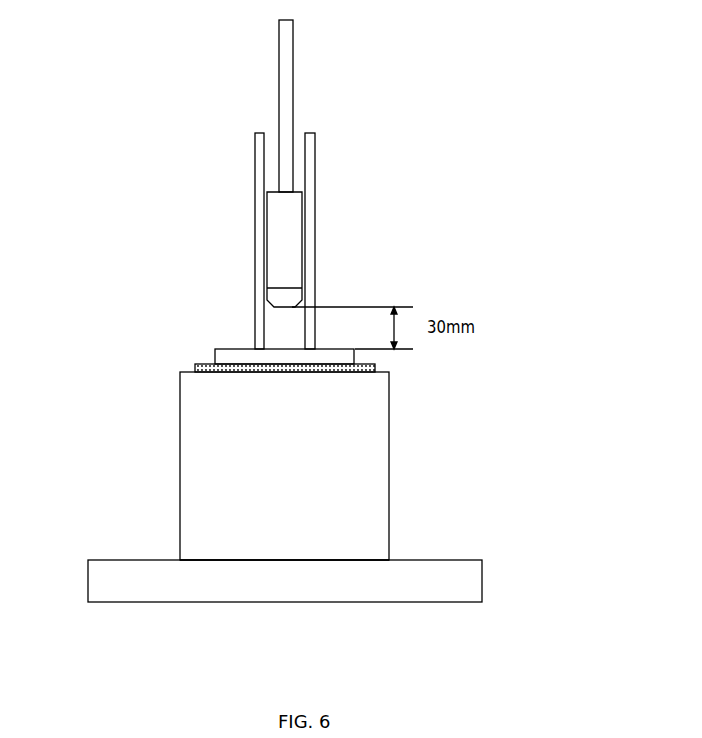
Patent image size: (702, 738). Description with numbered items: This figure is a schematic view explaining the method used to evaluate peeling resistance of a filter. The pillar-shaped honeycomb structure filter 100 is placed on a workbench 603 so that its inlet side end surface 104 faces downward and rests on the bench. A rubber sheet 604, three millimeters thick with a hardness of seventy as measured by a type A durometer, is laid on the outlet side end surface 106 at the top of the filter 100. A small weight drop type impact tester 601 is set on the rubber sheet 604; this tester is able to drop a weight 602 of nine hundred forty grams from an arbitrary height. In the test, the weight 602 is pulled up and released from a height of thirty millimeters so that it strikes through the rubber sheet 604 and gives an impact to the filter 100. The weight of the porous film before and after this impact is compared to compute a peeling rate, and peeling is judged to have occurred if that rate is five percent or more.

The pillar-shaped honeycomb structure filter 100 is at (310, 474).
The inlet side end surface 104 is at (262, 561).
The outlet side end surface 106 is at (188, 370).
The small weight drop type impact tester 601 is at (335, 152).
The weight 602 is at (272, 238).
The workbench 603 is at (128, 562).
The rubber sheet 604 is at (375, 363).